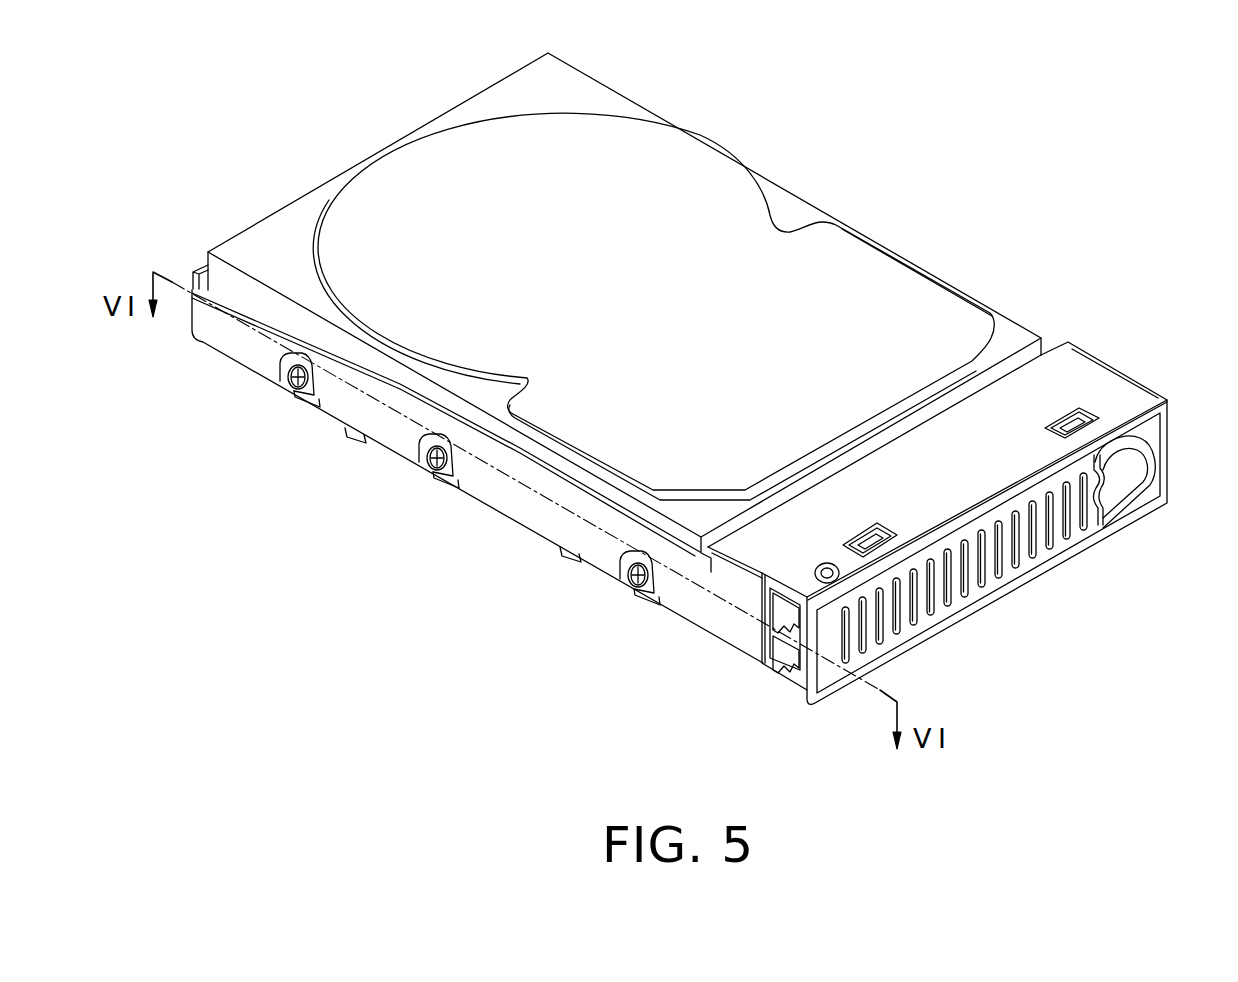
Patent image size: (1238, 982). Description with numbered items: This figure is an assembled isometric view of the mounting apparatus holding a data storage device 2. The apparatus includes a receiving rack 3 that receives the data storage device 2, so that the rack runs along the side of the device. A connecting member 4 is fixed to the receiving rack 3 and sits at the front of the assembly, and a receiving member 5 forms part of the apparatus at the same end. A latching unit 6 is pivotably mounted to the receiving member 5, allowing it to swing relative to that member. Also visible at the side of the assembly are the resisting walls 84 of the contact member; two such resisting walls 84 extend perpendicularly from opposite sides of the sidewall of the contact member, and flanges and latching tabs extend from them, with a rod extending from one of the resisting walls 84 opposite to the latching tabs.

The data storage device 2 is at (675, 207).
The receiving rack 3 is at (569, 524).
The connecting member 4 is at (1087, 388).
The receiving member 5 is at (1157, 503).
The latching unit 6 is at (923, 598).
The resisting walls 84 is at (783, 652).